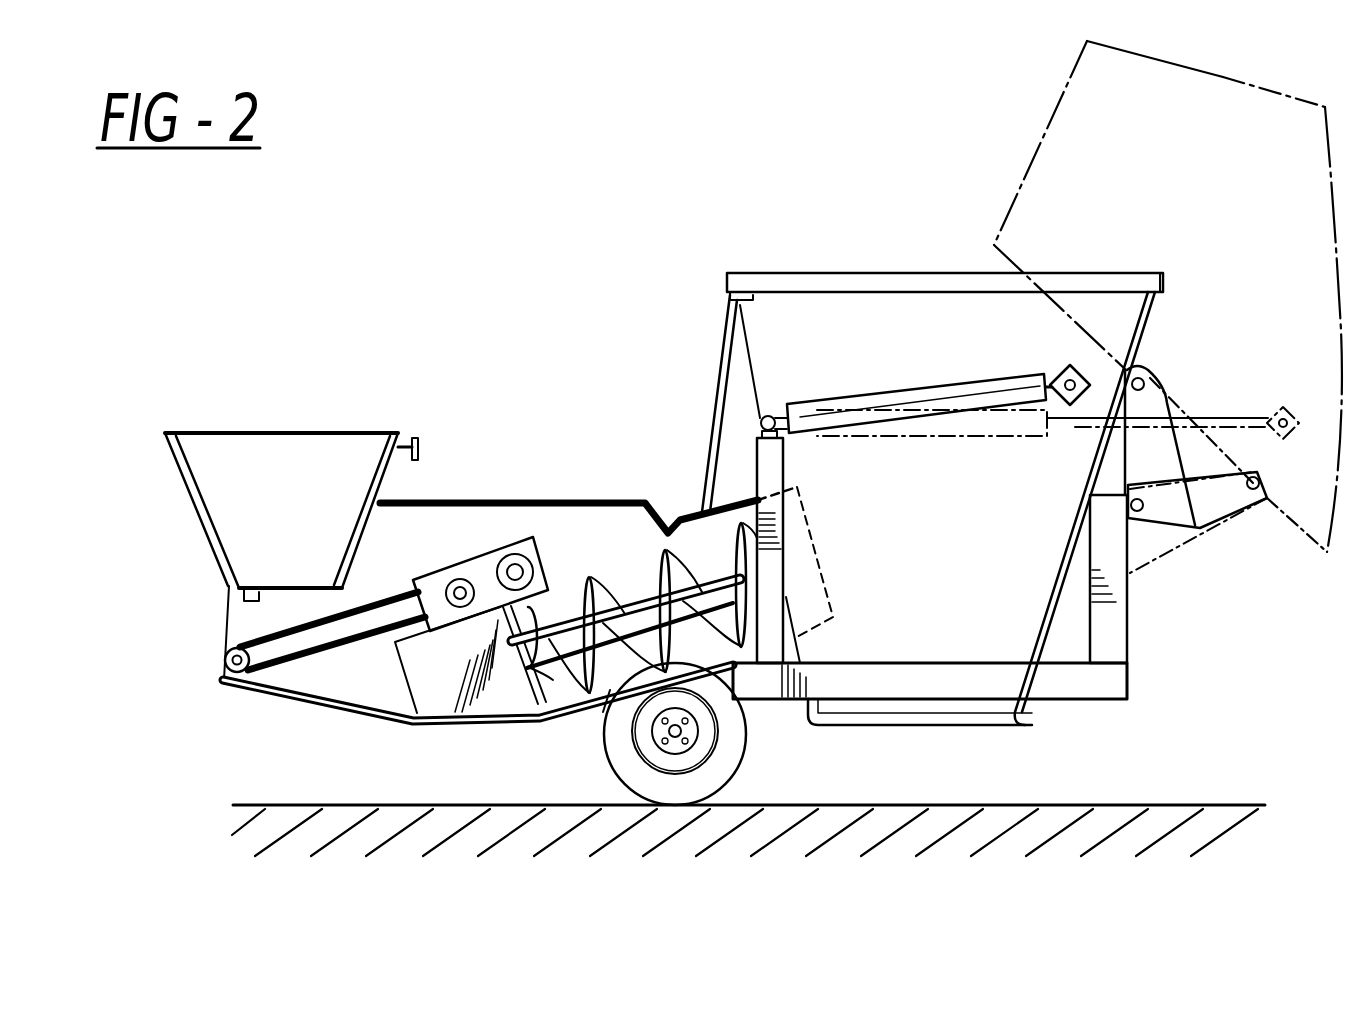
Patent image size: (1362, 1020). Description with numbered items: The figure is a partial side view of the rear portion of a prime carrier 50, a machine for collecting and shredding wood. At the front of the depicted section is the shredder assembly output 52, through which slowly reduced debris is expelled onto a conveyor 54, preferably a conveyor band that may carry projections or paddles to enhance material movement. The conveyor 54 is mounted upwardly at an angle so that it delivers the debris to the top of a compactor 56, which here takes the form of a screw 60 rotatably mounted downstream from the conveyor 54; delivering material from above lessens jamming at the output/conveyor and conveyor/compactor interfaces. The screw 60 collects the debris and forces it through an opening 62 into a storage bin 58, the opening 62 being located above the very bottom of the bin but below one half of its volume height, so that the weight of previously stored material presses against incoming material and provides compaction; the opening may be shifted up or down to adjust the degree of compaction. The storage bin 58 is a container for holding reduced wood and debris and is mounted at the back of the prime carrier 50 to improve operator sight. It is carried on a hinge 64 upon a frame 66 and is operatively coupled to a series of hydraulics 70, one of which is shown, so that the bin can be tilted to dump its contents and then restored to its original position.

The prime carrier 50 is at (525, 350).
The shredder assembly output 52 is at (228, 607).
The conveyor 54 is at (330, 665).
The compactor 56 is at (560, 725).
The storage bin 58 is at (833, 315).
The screw 60 is at (590, 580).
The opening 62 is at (810, 535).
The hinge 64 is at (1163, 520).
The frame 66 is at (1113, 678).
The hydraulics 70 is at (948, 390).